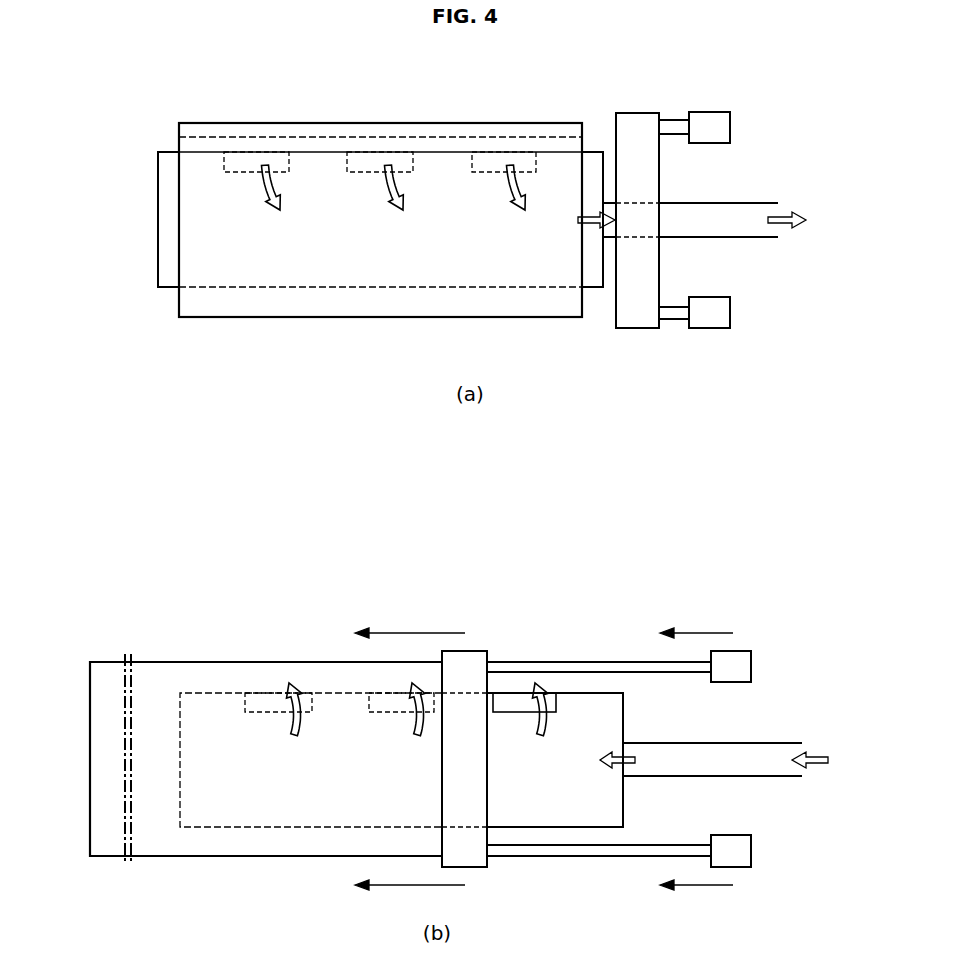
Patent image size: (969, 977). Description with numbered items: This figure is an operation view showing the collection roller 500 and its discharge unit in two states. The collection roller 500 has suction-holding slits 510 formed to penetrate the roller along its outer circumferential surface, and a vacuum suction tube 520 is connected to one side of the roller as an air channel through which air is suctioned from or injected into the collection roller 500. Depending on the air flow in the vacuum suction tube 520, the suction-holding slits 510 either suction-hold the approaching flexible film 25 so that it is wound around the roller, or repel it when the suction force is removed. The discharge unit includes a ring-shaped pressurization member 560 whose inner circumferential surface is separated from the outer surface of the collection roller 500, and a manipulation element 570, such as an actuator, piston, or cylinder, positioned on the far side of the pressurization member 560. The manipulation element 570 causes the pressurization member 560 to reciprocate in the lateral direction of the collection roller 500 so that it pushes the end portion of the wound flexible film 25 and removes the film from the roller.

The collection roller 500 is at (158, 206).
The suction-holding slits 510 is at (243, 163).
The flexible film 25 is at (213, 308).
The pressurization member 560 is at (637, 112).
The manipulation element 570 is at (707, 112).
The vacuum suction tube 520 is at (764, 203).